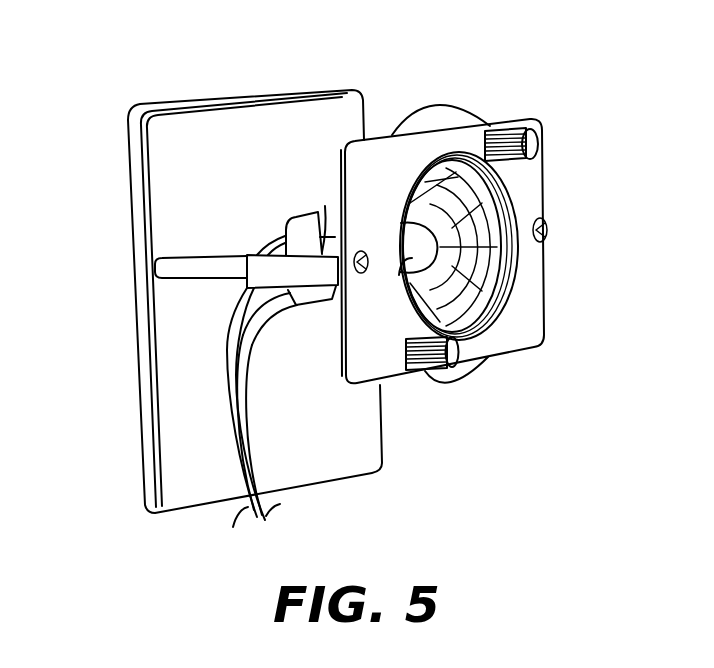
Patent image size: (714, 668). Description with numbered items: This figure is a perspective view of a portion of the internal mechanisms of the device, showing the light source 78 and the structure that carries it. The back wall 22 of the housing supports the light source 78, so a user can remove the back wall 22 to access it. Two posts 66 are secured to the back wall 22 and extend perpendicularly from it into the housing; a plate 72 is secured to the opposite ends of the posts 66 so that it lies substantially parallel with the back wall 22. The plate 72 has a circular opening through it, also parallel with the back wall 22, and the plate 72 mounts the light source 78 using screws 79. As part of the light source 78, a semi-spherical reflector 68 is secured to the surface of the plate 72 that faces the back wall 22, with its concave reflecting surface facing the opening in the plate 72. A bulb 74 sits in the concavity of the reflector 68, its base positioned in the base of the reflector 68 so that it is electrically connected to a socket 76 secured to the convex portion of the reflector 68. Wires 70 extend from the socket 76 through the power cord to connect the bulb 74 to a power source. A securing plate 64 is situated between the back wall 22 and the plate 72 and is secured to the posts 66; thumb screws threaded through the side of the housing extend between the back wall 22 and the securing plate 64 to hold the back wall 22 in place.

The back wall 22 is at (127, 135).
The securing plate 64 is at (218, 117).
The posts 66 is at (197, 267).
The semi-spherical reflector 68 is at (500, 198).
The wires 70 is at (247, 432).
The plate 72 is at (528, 325).
The bulb 74 is at (400, 268).
The socket 76 is at (300, 223).
The light source 78 is at (470, 90).
The screws 79 is at (517, 129).